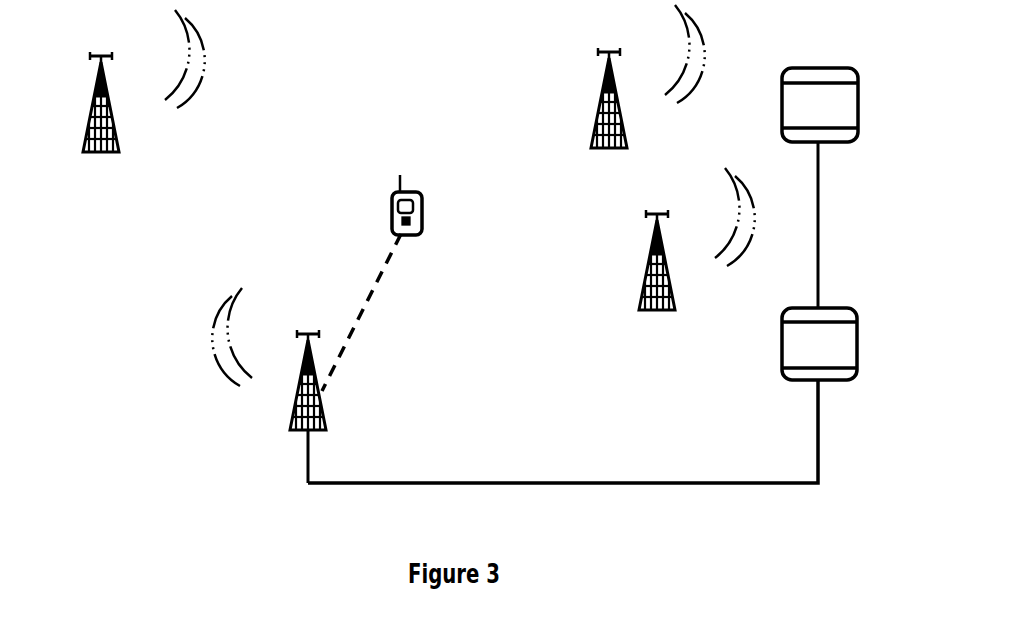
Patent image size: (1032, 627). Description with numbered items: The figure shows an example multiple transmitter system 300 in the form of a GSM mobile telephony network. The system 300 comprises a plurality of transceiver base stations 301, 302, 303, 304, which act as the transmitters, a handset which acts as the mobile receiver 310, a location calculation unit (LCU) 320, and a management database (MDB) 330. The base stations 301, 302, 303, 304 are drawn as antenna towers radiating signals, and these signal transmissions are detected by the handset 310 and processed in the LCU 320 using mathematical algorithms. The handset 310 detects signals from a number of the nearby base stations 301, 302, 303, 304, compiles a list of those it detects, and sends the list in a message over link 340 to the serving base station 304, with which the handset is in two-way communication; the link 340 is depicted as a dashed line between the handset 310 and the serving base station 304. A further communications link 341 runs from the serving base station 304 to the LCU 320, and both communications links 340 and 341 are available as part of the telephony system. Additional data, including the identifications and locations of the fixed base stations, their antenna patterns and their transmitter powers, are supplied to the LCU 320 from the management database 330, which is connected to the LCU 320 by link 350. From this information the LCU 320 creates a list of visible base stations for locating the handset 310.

The system 300 is at (142, 260).
The transceiver base station 301 is at (107, 162).
The transceiver base station 302 is at (610, 157).
The transceiver base station 303 is at (652, 318).
The serving base station 304 is at (282, 430).
The handset 310 is at (415, 240).
The location calculation unit (LCU) 320 is at (832, 385).
The management database (MDB) 330 is at (823, 150).
The link 340 is at (375, 313).
The communications link 341 is at (653, 468).
The link 350 is at (823, 202).